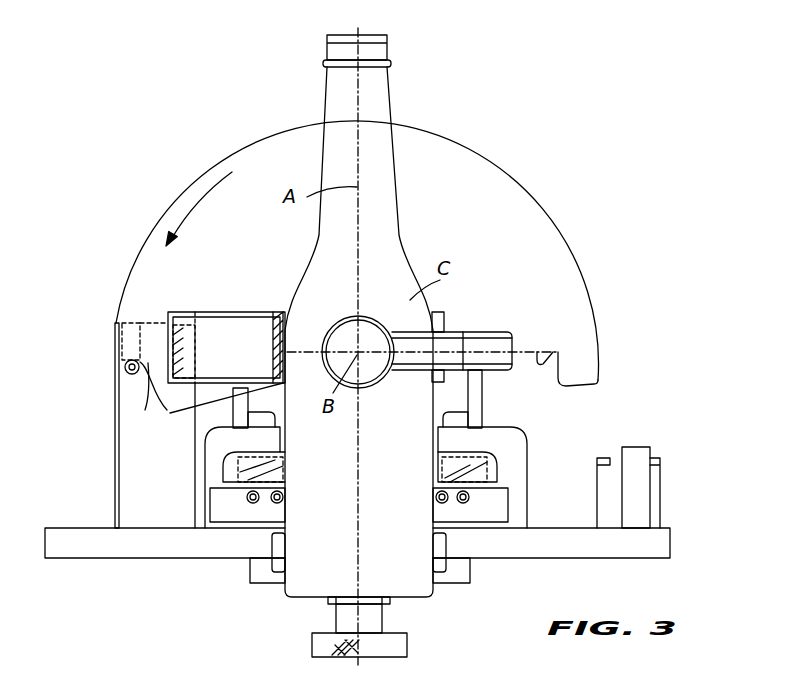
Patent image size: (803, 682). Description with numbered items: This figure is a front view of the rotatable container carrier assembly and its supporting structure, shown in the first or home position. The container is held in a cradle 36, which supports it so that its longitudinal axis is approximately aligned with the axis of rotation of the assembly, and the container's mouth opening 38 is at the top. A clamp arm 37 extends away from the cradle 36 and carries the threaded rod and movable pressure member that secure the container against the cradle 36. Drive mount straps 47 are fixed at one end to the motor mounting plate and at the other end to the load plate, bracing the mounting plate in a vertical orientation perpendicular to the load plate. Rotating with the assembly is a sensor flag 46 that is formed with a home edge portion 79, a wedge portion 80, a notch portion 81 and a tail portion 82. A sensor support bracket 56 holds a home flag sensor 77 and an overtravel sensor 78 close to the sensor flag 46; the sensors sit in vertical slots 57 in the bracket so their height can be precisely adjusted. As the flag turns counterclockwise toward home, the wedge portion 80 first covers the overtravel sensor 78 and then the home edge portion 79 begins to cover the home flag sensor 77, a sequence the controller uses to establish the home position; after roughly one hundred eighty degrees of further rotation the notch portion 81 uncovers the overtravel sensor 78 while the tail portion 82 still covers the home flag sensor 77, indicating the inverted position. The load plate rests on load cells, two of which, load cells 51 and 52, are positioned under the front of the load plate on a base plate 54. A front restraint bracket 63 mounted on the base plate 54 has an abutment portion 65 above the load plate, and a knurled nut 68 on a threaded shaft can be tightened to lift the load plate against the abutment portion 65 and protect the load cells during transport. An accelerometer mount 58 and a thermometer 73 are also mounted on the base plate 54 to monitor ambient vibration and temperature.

The mouth opening 38 is at (348, 36).
The sensor flag 46 is at (490, 178).
The clamp arm 37 is at (512, 346).
The notch portion 81 is at (553, 352).
The tail portion 82 is at (583, 372).
The cradle 36 is at (222, 340).
The overtravel sensor 78 is at (172, 340).
The vertical slots 57 is at (122, 330).
The home flag sensor 77 is at (124, 367).
The sensor support bracket 56 is at (118, 396).
The home edge portion 79 is at (140, 399).
The wedge portion 80 is at (177, 395).
The drive mount straps 47 is at (232, 410).
The front restraint bracket 63 is at (505, 445).
The abutment portion 65 is at (480, 470).
The load cell 52 is at (498, 505).
The load cell 51 is at (230, 505).
The base plate 54 is at (84, 527).
The accelerometer mount 58 is at (661, 490).
The thermometer 73 is at (640, 468).
The knurled nut 68 is at (322, 647).